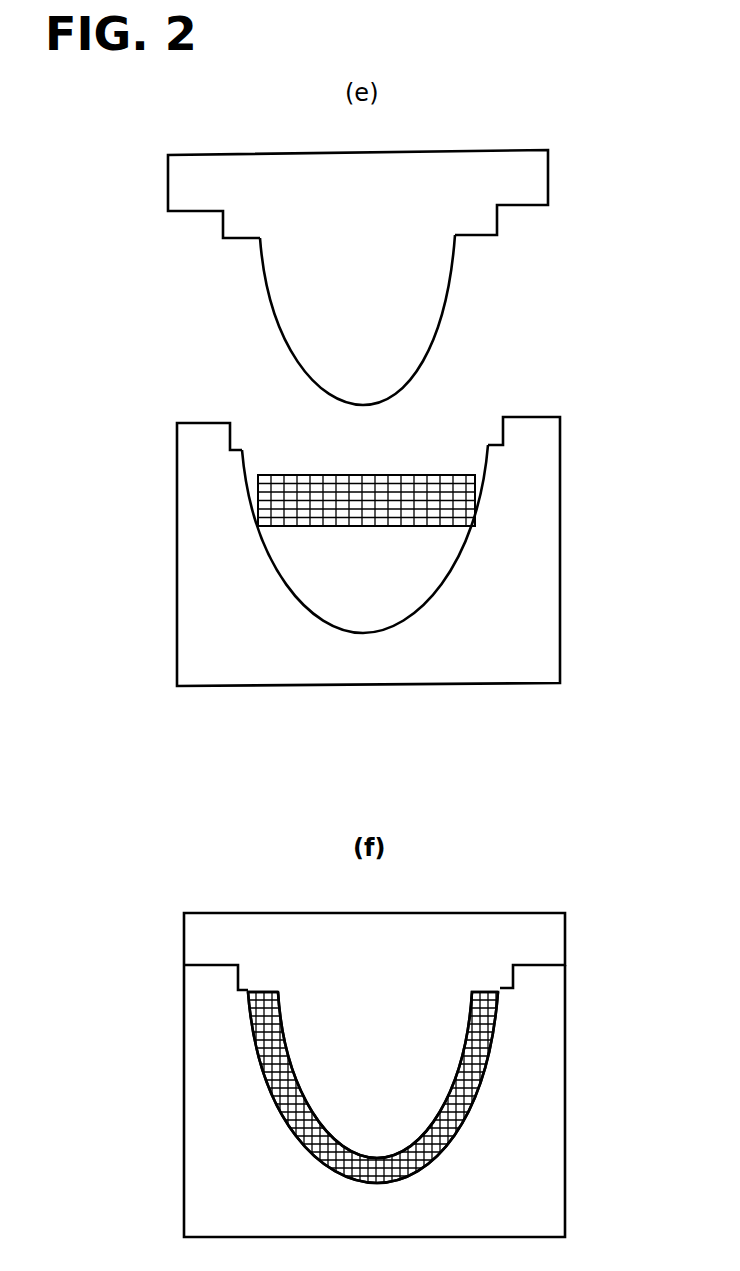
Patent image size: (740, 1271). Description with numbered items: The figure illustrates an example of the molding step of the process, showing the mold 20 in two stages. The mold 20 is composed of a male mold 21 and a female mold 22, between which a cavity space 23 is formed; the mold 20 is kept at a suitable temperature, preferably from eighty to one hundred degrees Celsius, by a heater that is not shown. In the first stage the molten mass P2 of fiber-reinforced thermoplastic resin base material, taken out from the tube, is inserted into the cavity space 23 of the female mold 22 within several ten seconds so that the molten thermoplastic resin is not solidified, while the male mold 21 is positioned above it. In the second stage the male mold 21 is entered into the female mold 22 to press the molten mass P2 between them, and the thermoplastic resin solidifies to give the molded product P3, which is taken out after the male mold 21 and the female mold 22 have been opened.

The mold 20 is at (166, 310).
The male mold 21 is at (523, 180).
The female mold 22 is at (532, 562).
The cavity space 23 is at (452, 585).
The molten mass P2 is at (427, 477).
The molded product P3 is at (270, 1088).